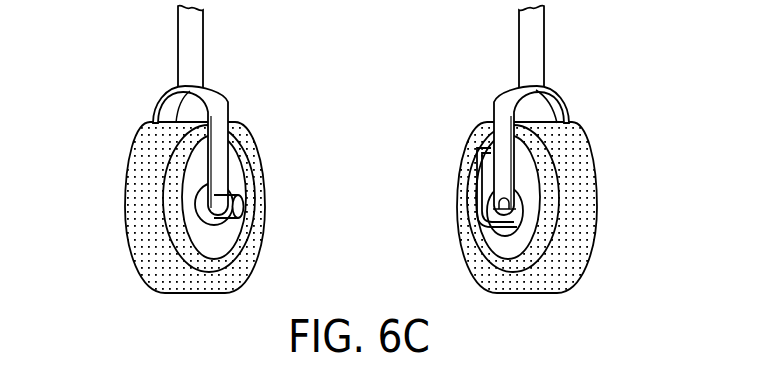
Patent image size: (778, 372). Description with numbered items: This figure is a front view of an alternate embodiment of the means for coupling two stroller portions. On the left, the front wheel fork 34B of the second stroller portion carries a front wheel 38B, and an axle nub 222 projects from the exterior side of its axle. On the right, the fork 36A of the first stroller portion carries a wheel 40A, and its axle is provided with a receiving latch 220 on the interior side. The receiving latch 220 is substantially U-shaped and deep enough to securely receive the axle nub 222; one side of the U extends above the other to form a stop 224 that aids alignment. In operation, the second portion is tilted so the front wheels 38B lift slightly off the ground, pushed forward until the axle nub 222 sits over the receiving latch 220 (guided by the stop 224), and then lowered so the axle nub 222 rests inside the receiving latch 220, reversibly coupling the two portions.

The front wheel fork 34B is at (221, 116).
The front wheels 38B is at (152, 240).
The axle nub 222 is at (241, 203).
The fork 36A is at (502, 122).
The stop 224 is at (485, 165).
The receiving latch 220 is at (500, 238).
The wheel 40A is at (573, 245).